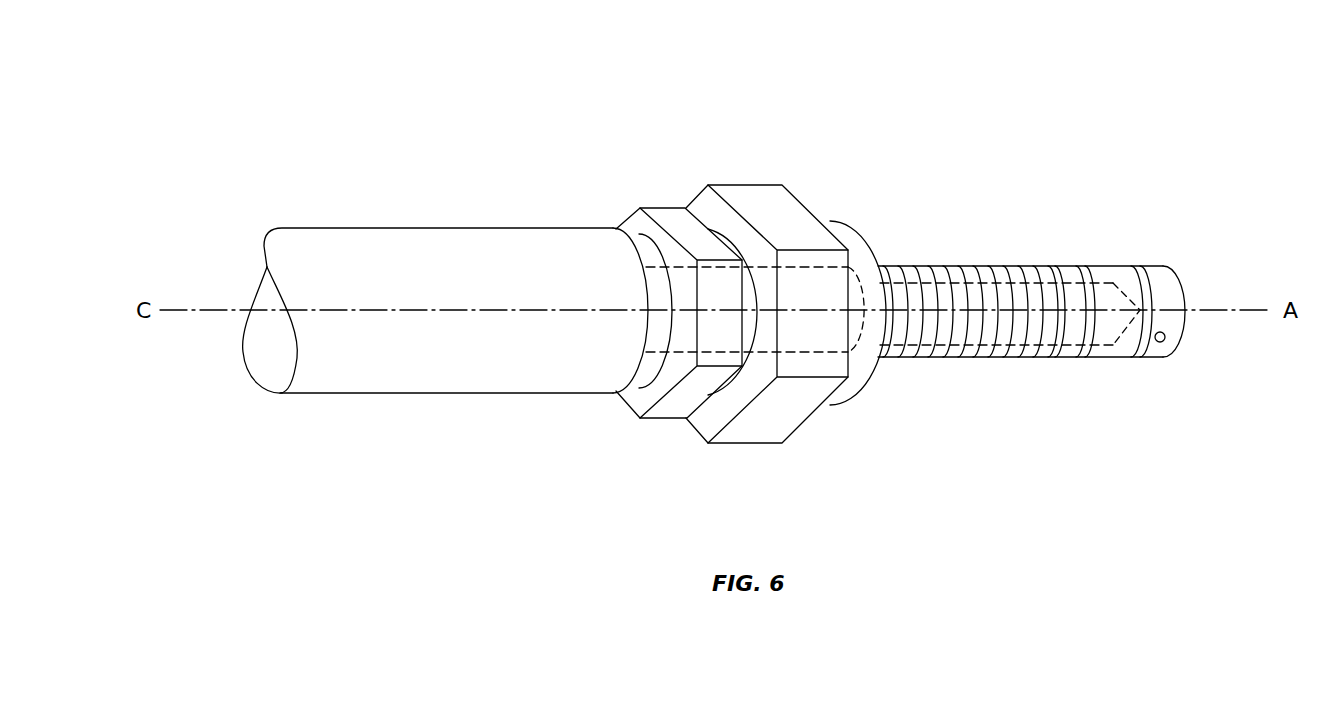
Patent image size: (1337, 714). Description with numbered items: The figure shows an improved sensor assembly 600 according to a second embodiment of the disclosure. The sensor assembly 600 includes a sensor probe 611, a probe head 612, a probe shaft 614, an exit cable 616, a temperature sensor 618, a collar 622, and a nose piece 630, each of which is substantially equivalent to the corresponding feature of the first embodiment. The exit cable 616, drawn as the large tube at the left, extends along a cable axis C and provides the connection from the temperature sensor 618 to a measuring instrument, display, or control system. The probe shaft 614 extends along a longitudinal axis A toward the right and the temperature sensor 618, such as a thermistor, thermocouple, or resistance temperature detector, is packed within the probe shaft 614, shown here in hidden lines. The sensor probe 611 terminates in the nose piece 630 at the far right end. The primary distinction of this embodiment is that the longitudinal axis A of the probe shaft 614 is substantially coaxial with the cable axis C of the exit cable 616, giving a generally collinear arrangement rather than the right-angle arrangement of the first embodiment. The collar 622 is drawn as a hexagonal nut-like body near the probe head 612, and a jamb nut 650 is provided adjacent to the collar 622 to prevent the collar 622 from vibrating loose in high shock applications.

The sensor assembly 600 is at (850, 110).
The sensor probe 611 is at (1070, 387).
The probe head 612 is at (642, 247).
The probe shaft 614 is at (868, 375).
The exit cable 616 is at (346, 358).
The temperature sensor 618 is at (1112, 268).
The collar 622 is at (762, 433).
The nose piece 630 is at (1108, 365).
The jamb nut 650 is at (682, 398).